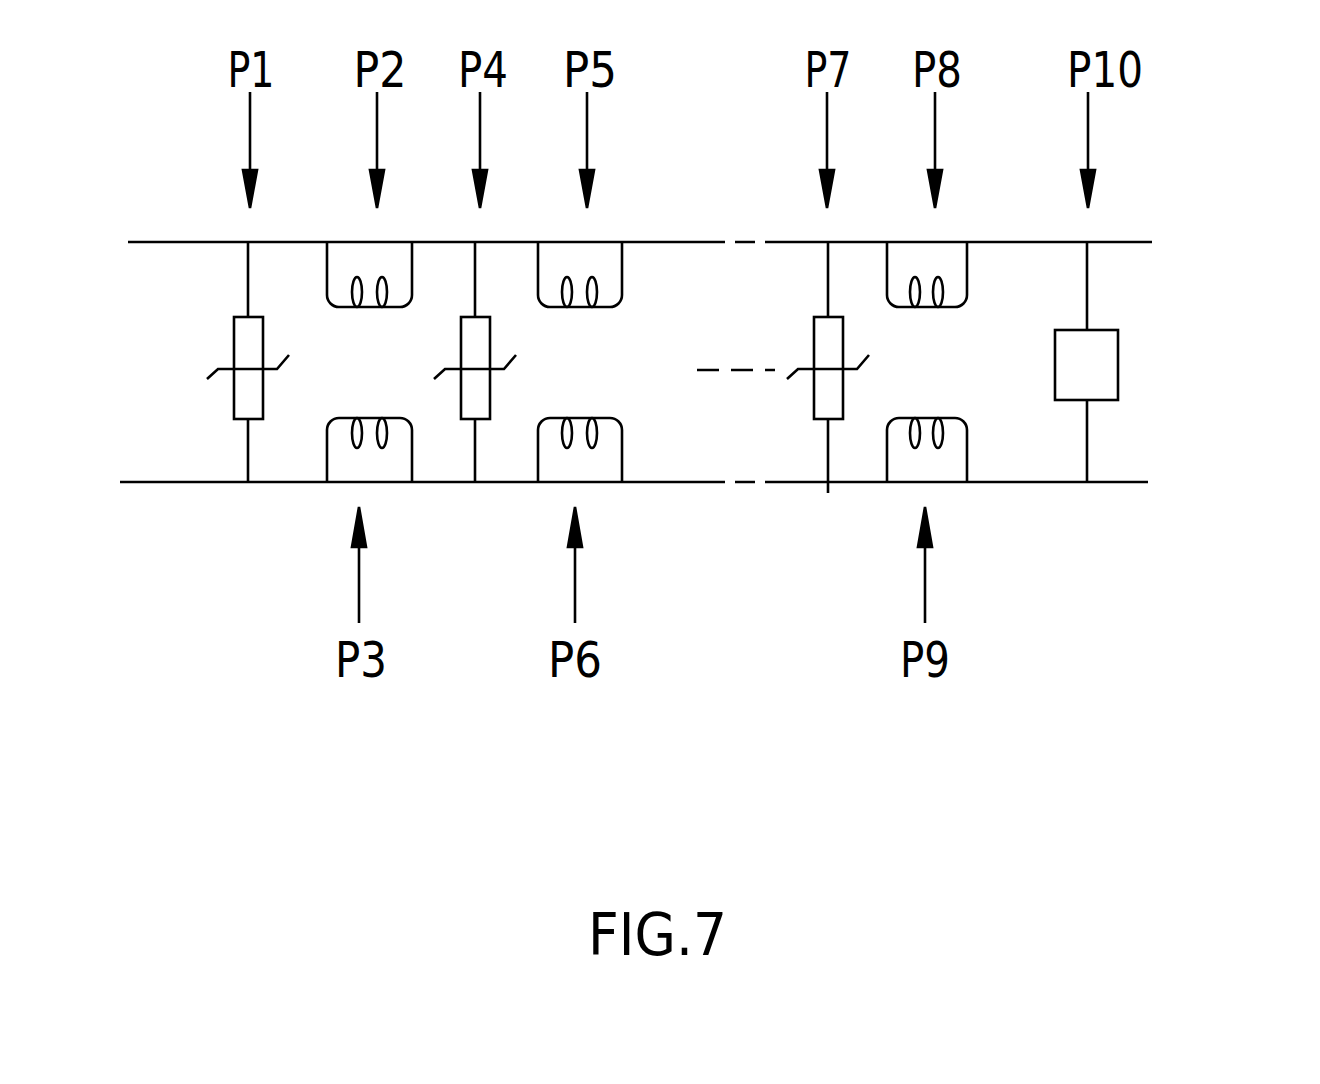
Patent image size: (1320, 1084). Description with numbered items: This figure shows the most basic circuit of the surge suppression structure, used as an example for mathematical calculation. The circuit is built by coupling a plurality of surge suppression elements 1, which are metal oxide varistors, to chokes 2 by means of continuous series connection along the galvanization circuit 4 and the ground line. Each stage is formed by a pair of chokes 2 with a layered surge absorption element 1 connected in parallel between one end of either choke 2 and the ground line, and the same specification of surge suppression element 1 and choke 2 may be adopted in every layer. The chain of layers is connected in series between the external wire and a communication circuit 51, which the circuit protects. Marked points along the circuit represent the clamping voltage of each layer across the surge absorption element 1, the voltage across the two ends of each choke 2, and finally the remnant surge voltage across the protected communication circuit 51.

The layered surge absorption element 1 is at (828, 395).
The choke 2 is at (928, 460).
The galvanization circuit 4 is at (1027, 240).
The communication circuit 51 is at (1087, 369).